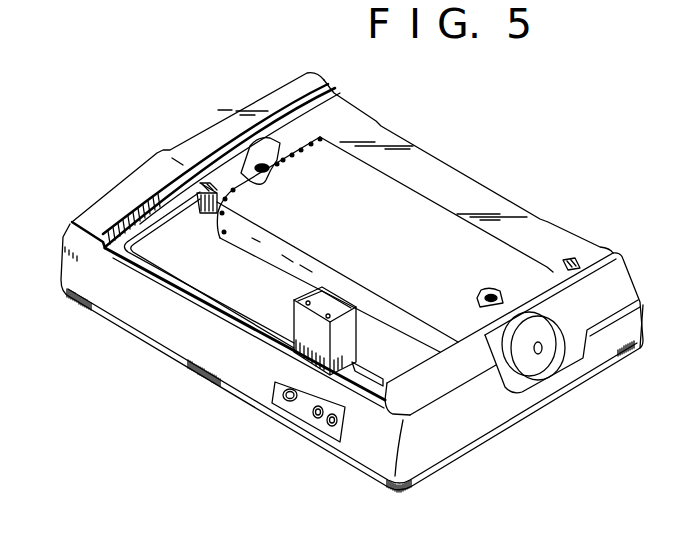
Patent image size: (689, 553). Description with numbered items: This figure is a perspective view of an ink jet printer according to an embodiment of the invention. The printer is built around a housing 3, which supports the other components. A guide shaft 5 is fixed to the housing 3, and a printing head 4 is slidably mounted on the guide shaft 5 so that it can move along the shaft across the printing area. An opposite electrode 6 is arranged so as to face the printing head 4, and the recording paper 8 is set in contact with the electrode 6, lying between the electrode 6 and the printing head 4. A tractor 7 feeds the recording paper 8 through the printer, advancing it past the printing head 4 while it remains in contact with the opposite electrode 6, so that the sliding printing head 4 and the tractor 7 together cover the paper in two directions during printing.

The housing 3 is at (140, 183).
The printing head 4 is at (302, 320).
The guide shaft 5 is at (221, 290).
The opposite electrode 6 is at (197, 210).
The tractor 7 is at (252, 164).
The recording paper 8 is at (400, 222).